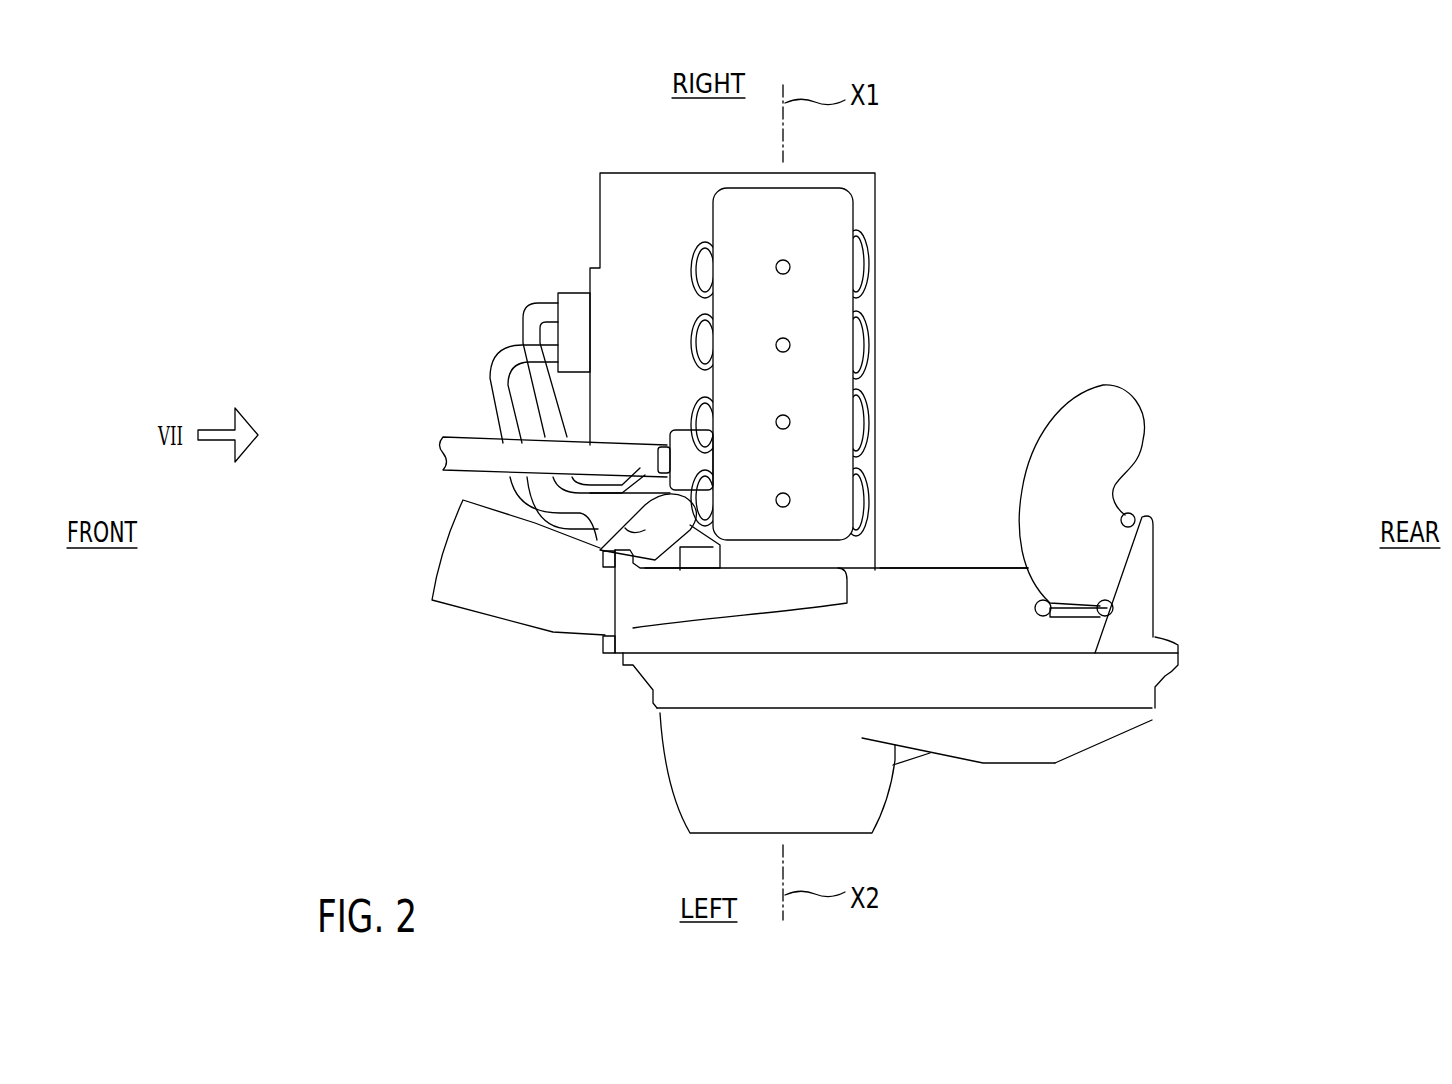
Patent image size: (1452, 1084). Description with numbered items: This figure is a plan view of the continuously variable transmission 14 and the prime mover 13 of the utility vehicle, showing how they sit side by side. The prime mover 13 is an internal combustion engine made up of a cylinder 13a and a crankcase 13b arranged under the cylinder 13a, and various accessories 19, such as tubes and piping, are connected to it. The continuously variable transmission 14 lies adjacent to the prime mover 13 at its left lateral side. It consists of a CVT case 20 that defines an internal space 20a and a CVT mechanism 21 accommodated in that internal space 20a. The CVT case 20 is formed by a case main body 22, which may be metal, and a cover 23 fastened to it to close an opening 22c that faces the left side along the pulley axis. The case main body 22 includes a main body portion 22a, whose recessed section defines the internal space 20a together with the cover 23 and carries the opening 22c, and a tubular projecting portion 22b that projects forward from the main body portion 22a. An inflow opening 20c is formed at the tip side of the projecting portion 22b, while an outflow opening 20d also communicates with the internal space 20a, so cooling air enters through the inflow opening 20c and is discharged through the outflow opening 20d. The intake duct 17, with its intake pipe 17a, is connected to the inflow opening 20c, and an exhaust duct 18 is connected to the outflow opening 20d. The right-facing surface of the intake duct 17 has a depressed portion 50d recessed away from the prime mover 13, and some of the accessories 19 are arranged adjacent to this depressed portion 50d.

The prime mover 13 is at (647, 173).
The cylinder 13a is at (855, 213).
The crankcase 13b is at (878, 300).
The continuously variable transmission 14 is at (1111, 752).
The intake duct 17 is at (437, 622).
The intake pipe 17a is at (440, 545).
The exhaust duct 18 is at (1095, 383).
The accessories 19 is at (590, 555).
The CVT case 20 is at (1273, 627).
The internal space 20a is at (990, 728).
The inflow opening 20c is at (613, 613).
The outflow opening 20d is at (1110, 570).
The CVT mechanism 21 is at (727, 753).
The case main body 22 is at (1173, 630).
The main body portion 22a is at (930, 586).
The projecting portion 22b is at (760, 583).
The opening 22c is at (683, 657).
The cover 23 is at (1153, 718).
The depressed portion 50d is at (593, 553).